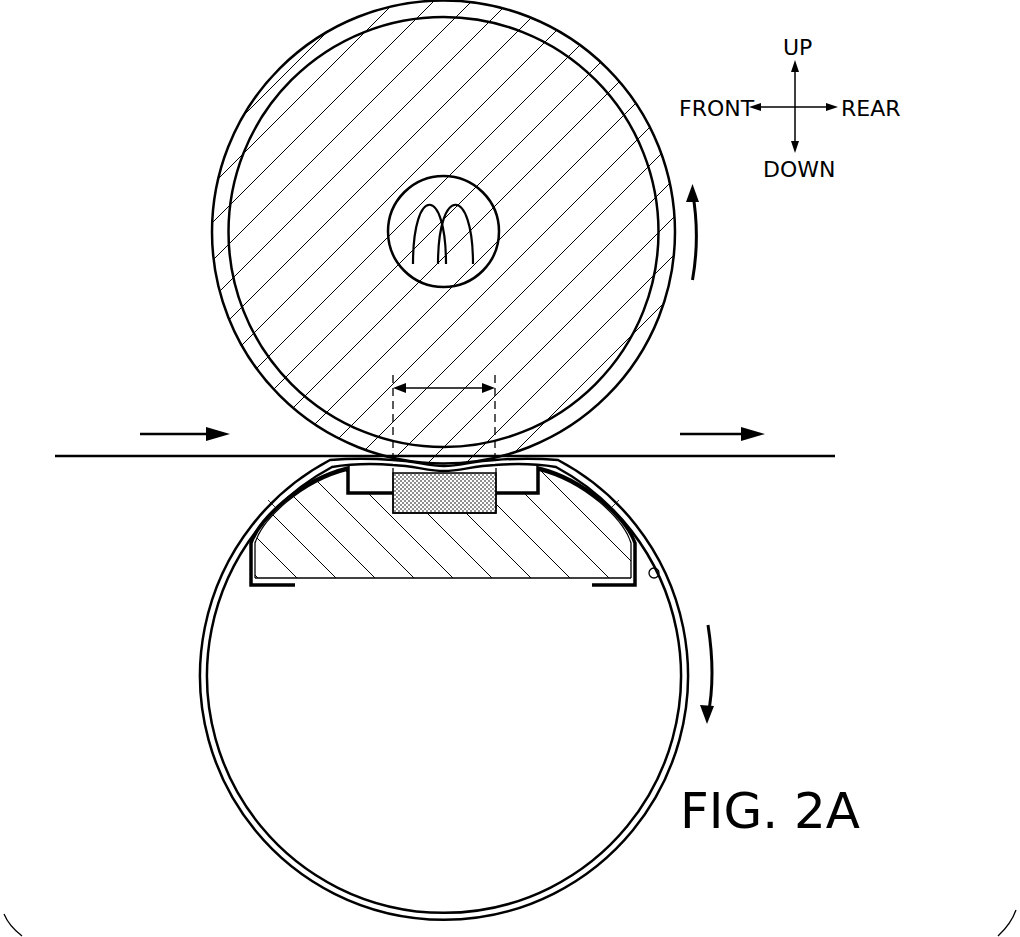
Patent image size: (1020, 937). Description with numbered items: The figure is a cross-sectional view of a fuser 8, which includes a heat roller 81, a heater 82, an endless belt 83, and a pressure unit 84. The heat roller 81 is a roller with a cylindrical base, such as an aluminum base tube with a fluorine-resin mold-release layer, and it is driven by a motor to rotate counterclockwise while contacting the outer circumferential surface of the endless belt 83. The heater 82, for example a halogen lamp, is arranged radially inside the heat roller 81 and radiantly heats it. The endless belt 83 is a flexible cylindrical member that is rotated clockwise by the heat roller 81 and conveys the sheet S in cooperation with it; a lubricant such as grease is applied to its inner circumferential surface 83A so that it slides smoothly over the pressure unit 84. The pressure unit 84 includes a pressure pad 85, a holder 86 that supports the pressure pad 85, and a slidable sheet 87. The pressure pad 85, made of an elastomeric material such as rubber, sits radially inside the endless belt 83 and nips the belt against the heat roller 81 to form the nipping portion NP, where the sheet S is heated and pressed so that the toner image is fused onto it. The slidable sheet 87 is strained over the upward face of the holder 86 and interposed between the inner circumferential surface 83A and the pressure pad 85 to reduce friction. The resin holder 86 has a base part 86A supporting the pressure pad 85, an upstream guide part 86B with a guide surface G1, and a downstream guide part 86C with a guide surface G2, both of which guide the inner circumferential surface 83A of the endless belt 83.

The fuser 8 is at (175, 89).
The heat roller 81 is at (612, 72).
The heater 82 is at (487, 195).
The endless belt 83 is at (679, 605).
The inner circumferential surface 83A is at (660, 577).
The pressure unit 84 is at (541, 640).
The pressure pad 85 is at (420, 512).
The holder 86 is at (434, 563).
The base part 86A is at (472, 565).
The guide part 86B is at (290, 543).
The guide part 86C is at (598, 538).
The slidable sheet 87 is at (250, 566).
The nipping portion NP is at (444, 407).
The guide surface G1 is at (270, 500).
The guide surface G2 is at (616, 500).
The sheet S is at (105, 455).